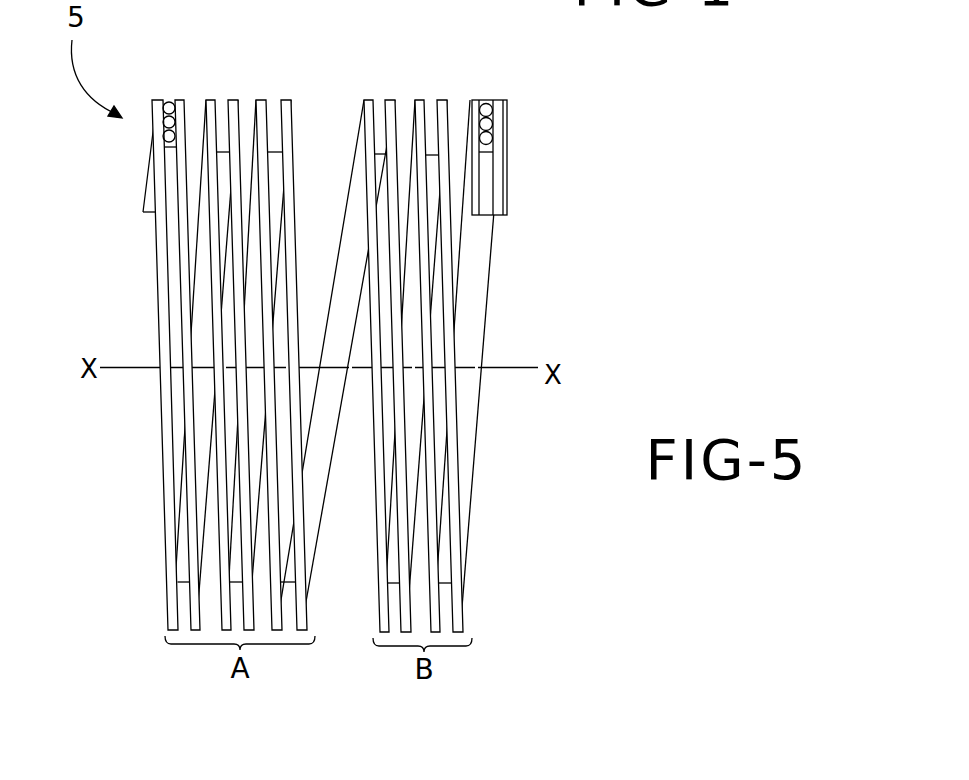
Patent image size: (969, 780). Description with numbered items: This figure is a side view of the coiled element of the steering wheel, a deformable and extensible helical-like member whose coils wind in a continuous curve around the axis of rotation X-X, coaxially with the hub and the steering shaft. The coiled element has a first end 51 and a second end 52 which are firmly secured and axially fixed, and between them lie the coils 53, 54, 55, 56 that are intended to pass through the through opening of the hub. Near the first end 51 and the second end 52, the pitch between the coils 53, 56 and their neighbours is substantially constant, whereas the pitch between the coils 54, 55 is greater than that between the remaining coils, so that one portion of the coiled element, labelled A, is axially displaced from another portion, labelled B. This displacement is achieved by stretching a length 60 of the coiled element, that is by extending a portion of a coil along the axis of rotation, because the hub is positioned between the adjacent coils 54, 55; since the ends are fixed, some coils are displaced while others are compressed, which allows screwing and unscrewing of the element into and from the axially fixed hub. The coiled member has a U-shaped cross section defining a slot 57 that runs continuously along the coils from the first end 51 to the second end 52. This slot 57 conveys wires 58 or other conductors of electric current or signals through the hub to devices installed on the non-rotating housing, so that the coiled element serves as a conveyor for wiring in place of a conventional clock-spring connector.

The first end 51 is at (514, 137).
The second end 52 is at (148, 102).
The coil 53 is at (200, 102).
The coil 54 is at (252, 102).
The coil 55 is at (355, 102).
The coil 56 is at (453, 102).
The slot 57 is at (291, 601).
The wires 58 is at (486, 128).
The length of the coiled element 60 is at (345, 306).